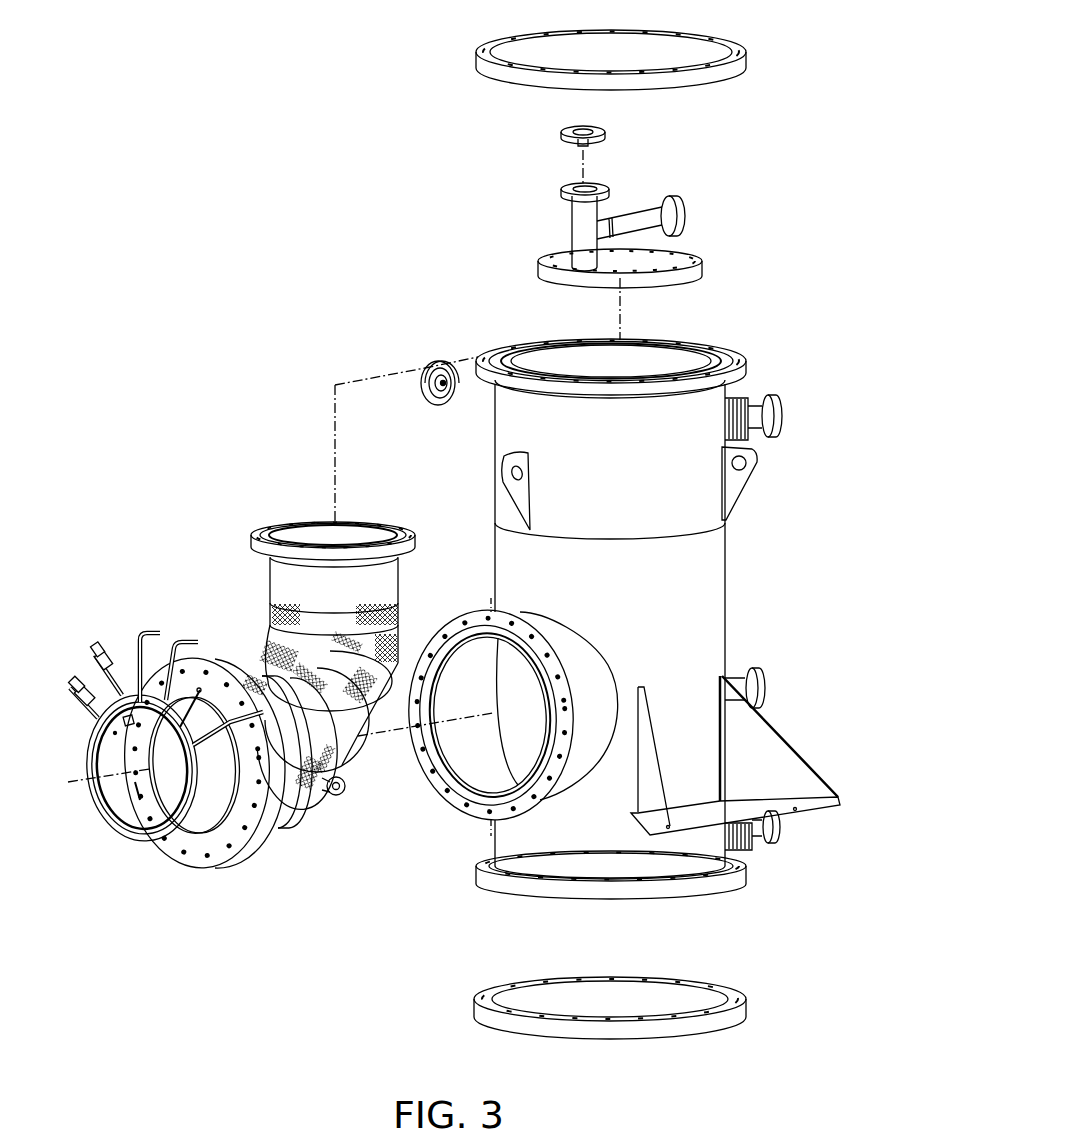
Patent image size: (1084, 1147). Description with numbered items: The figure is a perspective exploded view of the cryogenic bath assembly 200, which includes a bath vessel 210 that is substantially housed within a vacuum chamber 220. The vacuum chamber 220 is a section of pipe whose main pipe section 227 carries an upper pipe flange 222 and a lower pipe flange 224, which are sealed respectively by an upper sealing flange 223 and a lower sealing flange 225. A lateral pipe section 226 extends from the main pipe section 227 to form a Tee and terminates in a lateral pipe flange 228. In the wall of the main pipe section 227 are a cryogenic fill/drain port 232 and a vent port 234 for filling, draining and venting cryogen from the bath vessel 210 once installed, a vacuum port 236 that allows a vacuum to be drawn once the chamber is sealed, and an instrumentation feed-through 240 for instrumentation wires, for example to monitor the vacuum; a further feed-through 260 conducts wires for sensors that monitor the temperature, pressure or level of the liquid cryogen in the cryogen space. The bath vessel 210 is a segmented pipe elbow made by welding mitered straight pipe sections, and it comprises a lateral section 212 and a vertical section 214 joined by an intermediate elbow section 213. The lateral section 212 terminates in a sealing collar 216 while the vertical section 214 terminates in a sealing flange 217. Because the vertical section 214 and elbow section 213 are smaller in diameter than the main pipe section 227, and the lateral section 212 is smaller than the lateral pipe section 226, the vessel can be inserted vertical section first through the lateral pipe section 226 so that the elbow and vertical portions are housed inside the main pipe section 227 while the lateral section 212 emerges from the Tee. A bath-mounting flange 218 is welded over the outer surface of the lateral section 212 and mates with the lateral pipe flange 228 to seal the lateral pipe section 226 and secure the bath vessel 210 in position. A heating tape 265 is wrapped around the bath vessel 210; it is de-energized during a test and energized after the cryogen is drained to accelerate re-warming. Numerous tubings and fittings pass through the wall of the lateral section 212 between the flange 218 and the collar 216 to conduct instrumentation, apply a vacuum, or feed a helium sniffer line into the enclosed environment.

The cryogenic bath assembly 200 is at (130, 195).
The bath vessel 210 is at (195, 558).
The lateral section 212 is at (288, 788).
The intermediate elbow section 213 is at (348, 737).
The vertical section 214 is at (268, 585).
The sealing collar 216 is at (128, 838).
The sealing flange 217 is at (257, 550).
The bath-mounting flange 218 is at (190, 850).
The vacuum chamber 220 is at (748, 551).
The upper pipe flange 222 is at (745, 361).
The upper sealing flange 223 is at (712, 45).
The lower pipe flange 224 is at (738, 875).
The lower sealing flange 225 is at (717, 998).
The lateral pipe section 226 is at (597, 673).
The main pipe section 227 is at (718, 600).
The lateral pipe flange 228 is at (457, 800).
The cryogenic fill/drain port 232 is at (777, 822).
The vent port 234 is at (778, 405).
The vacuum port 236 is at (745, 672).
The instrumentation feed-through 240 is at (440, 362).
The feed-through 260 is at (583, 125).
The heating tape 265 is at (263, 663).